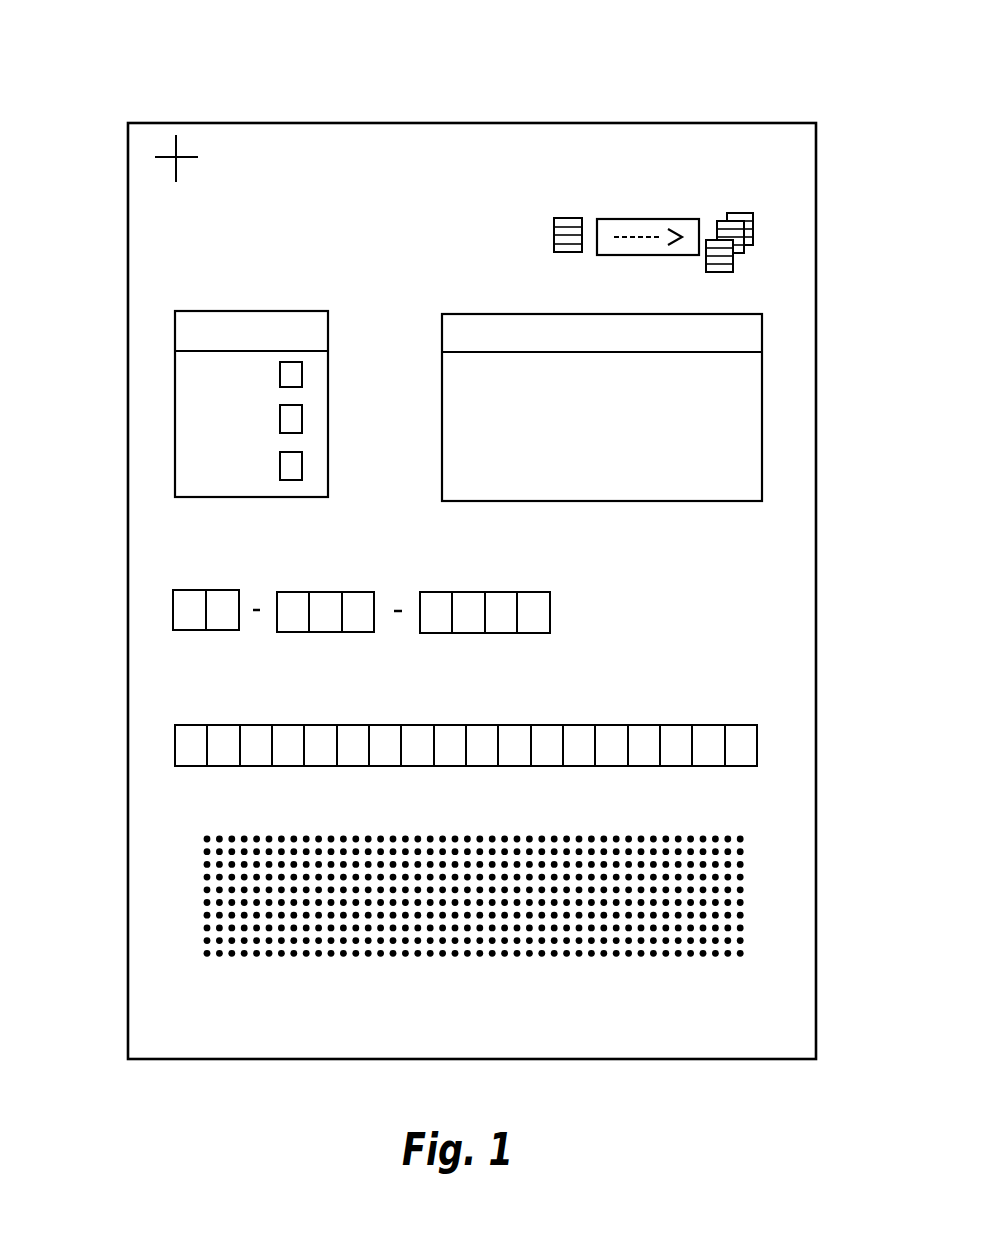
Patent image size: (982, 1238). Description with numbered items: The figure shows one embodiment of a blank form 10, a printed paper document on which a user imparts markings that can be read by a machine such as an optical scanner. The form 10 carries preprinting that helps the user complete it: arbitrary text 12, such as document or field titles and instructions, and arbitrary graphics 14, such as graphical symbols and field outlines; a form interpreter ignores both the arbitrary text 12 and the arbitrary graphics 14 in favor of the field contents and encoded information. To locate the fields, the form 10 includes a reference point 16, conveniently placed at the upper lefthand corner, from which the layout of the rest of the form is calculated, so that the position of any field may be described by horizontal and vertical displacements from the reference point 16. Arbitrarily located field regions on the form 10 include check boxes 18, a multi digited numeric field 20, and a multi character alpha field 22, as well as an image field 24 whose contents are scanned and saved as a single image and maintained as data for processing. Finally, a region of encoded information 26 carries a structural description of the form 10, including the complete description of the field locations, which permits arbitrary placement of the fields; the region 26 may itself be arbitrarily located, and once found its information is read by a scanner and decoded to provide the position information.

The blank form 10 is at (305, 62).
The arbitrary text 12 is at (225, 243).
The arbitrary graphics 14 is at (760, 210).
The reference point 16 is at (160, 150).
The check boxes 18 is at (277, 413).
The multi digited numeric field 20 is at (167, 605).
The multi character alpha field 22 is at (172, 745).
The image field 24 is at (770, 400).
The region of encoded information 26 is at (200, 887).